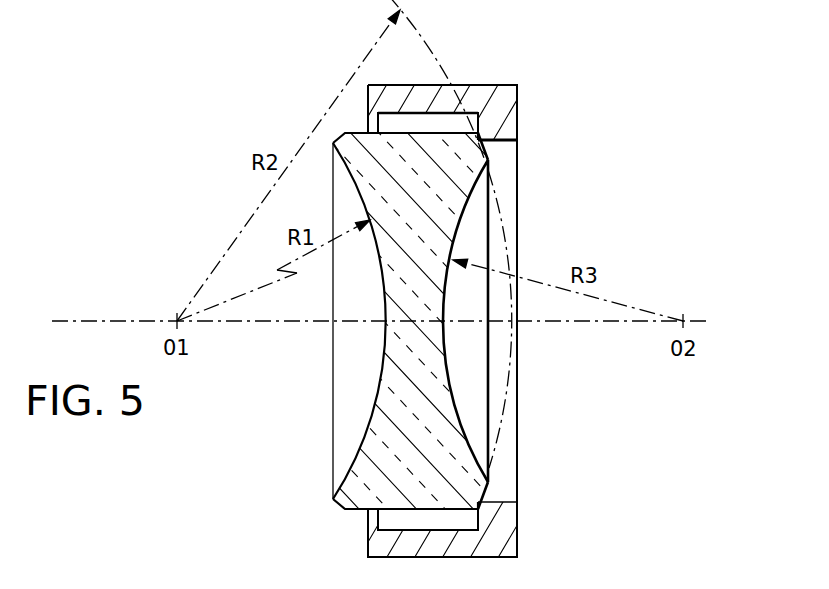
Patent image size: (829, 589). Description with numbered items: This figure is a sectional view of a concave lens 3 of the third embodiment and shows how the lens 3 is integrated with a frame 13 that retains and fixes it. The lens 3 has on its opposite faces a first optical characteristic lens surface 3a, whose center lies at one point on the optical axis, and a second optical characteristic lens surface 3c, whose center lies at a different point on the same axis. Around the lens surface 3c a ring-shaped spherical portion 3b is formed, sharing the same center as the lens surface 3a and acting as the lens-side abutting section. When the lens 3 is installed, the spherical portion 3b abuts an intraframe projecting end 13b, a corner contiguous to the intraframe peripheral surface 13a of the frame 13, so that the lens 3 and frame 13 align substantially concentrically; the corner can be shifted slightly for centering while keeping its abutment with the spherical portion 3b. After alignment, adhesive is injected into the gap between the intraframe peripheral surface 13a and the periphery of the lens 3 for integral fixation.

The lens 3 is at (328, 433).
The lens surface 3a is at (383, 288).
The spherical portion 3b is at (488, 160).
The lens surface 3c is at (468, 440).
The frame 13 is at (517, 70).
The intraframe peripheral surface 13a is at (407, 113).
The intraframe projecting end 13b is at (480, 137).